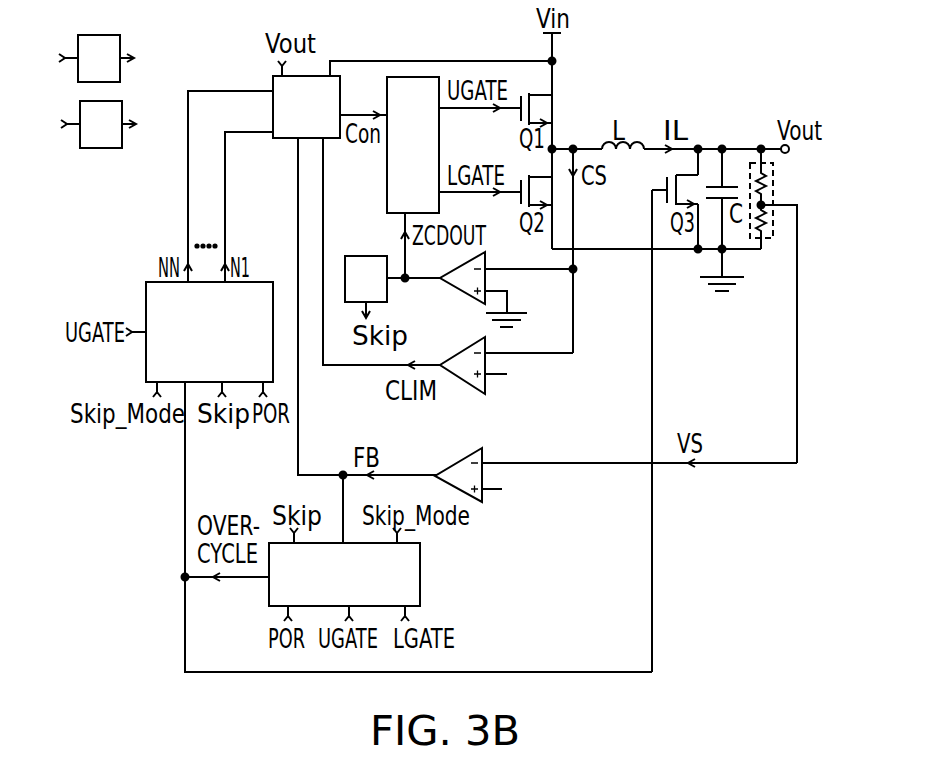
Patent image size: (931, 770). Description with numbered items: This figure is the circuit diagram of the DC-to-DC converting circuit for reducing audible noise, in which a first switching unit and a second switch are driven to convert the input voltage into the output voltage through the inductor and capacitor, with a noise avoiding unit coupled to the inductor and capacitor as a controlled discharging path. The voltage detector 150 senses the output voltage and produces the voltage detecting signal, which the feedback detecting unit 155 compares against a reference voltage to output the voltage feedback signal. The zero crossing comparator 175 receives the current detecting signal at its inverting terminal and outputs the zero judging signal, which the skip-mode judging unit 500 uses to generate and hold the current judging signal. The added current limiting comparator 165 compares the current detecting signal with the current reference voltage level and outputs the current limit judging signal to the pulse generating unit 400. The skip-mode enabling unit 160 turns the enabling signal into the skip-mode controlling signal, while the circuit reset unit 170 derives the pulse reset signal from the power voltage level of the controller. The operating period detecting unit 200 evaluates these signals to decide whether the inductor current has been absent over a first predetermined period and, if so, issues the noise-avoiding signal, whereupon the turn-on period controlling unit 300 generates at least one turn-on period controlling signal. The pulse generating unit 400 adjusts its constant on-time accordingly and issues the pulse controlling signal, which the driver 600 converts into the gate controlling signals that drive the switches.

The skip-mode enabling unit 160 is at (140, 58).
The circuit reset unit 170 is at (97, 124).
The pulse generating unit 400 is at (306, 107).
The driver 600 is at (413, 145).
The turn-on period controlling unit 300 is at (199, 339).
The skip-mode judging unit 500 is at (366, 279).
The operating period detecting unit 200 is at (344, 574).
The zero crossing comparator 175 is at (452, 282).
The current limiting comparator 165 is at (466, 350).
The feedback detecting unit 155 is at (463, 460).
The voltage detector 150 is at (774, 186).